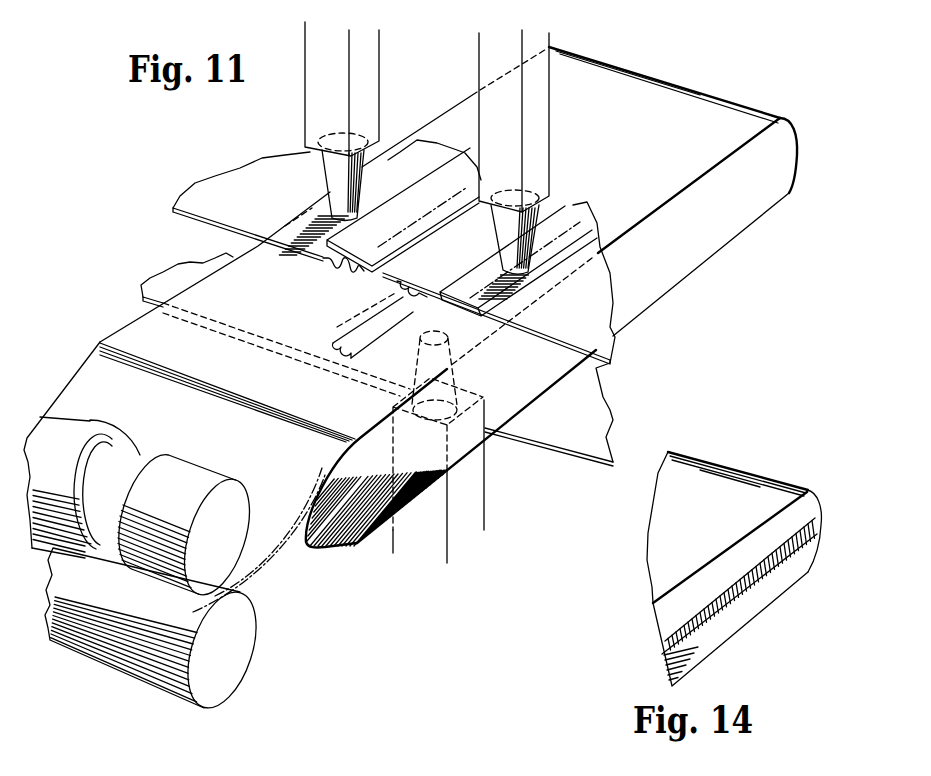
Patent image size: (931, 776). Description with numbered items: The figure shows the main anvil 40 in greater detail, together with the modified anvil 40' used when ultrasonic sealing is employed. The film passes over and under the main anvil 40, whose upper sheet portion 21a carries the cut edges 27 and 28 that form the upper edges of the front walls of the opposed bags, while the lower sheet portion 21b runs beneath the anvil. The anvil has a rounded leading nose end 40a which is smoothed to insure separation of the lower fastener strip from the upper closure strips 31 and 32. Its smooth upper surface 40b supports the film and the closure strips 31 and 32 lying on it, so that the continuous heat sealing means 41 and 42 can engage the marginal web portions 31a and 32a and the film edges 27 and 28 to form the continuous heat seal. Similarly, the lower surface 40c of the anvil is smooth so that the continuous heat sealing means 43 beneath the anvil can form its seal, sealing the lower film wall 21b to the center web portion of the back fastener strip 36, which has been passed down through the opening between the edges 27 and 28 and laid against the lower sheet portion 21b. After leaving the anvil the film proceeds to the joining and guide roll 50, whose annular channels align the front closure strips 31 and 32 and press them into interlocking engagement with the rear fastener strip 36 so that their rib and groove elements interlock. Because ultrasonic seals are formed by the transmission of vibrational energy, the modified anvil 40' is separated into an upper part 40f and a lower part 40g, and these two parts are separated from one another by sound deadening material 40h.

In FIG. 11, the upper sheet portion of the film 21a is at (607, 343).
In FIG. 11, the lower sheet portion of the film 21b is at (583, 447).
In FIG. 11, the cut edge 27 is at (437, 352).
In FIG. 11, the cut edge 28 is at (312, 260).
In FIG. 11, the upper closure strip 31 is at (550, 200).
In FIG. 11, the marginal portion 31a is at (518, 294).
In FIG. 11, the upper closure strip 32 is at (442, 176).
In FIG. 11, the marginal portion 32a is at (317, 228).
In FIG. 11, the back fastener strip 36 is at (370, 368).
In FIG. 11, the main anvil 40 is at (422, 329).
In FIG. 11, the rounded leading nose end 40a is at (794, 131).
In FIG. 11, the upper surface of the anvil 40b is at (682, 120).
In FIG. 11, the lower surface of the anvil 40c is at (697, 270).
In FIG. 14, the anvil 40' is at (751, 559).
In FIG. 14, the upper part 40f is at (721, 486).
In FIG. 14, the lower part 40g is at (796, 577).
In FIG. 14, the sound deadening material 40h is at (820, 524).
In FIG. 11, the continuous heat sealing means 41 is at (545, 106).
In FIG. 11, the continuous heat sealing means 42 is at (372, 65).
In FIG. 11, the continuous heat sealing means 43 is at (485, 509).
In FIG. 11, the joining and guide roll 50 is at (241, 497).